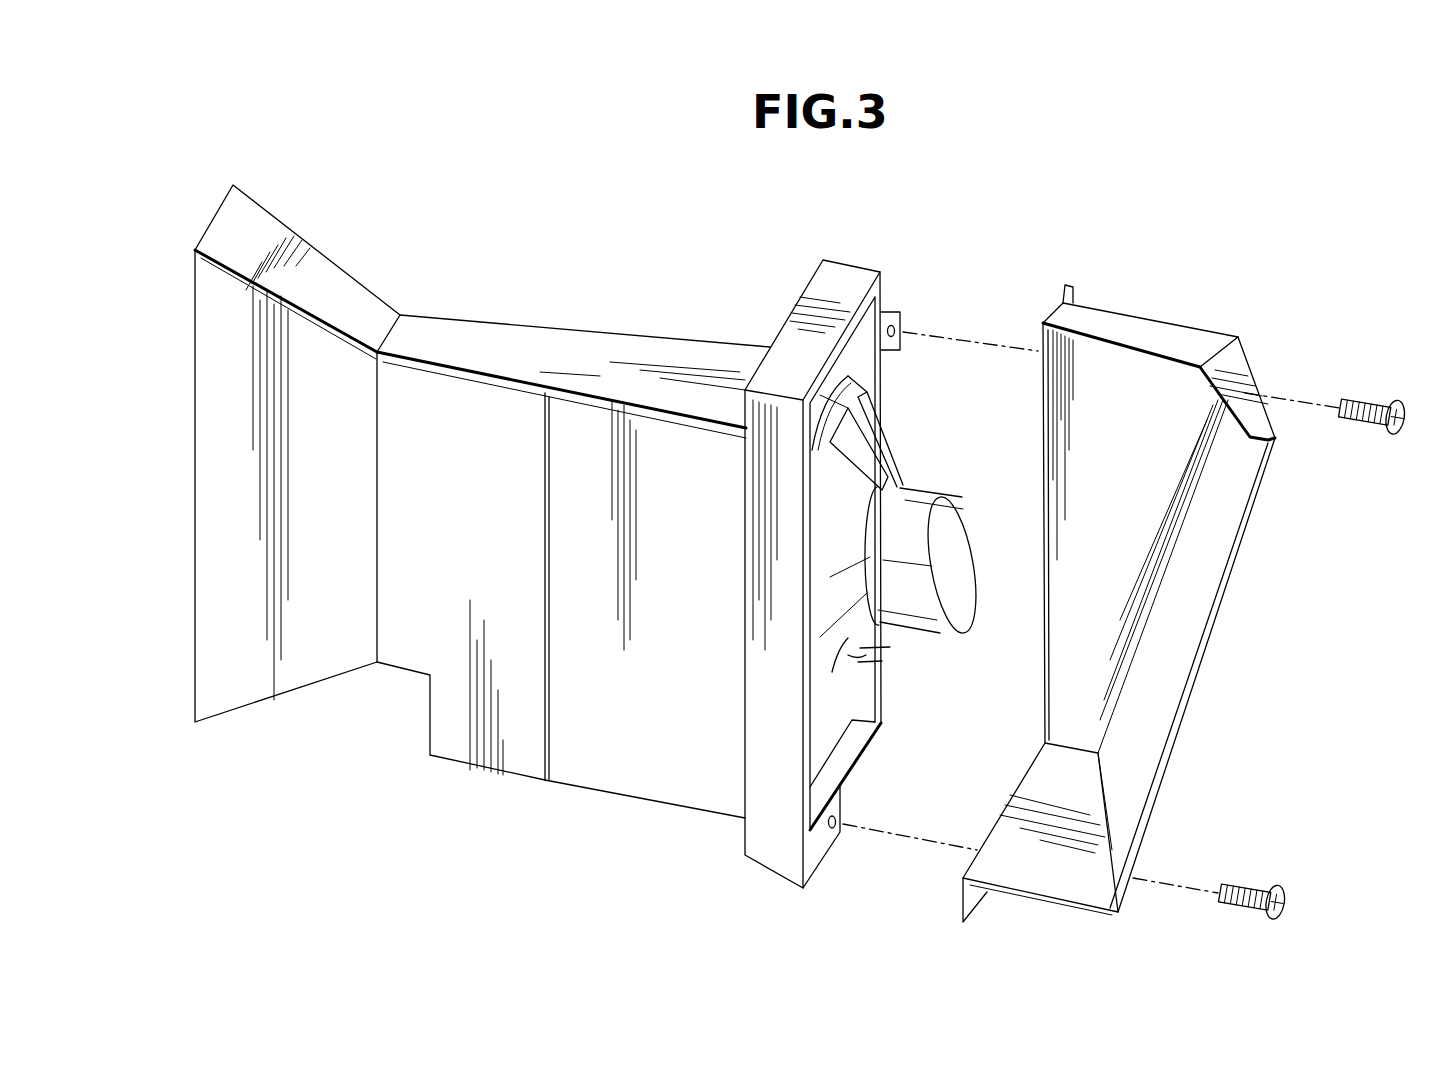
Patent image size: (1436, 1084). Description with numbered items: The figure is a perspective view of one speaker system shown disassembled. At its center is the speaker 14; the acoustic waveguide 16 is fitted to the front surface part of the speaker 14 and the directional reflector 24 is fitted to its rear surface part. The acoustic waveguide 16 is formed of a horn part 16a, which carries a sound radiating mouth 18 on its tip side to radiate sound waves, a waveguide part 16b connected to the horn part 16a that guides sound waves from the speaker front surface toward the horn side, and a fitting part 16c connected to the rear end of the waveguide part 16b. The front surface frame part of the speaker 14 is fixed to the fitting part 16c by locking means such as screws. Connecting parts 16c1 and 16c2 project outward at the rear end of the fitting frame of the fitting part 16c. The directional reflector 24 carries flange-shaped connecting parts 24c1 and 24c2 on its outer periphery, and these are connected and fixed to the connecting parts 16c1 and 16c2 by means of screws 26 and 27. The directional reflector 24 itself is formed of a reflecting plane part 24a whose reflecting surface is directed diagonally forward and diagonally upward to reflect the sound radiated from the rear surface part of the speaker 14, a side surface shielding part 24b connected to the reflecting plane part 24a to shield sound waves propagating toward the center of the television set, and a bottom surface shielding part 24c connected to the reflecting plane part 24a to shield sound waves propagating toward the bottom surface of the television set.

The speaker 14 is at (895, 450).
The acoustic waveguide 16 is at (652, 215).
The horn part 16a is at (385, 312).
The waveguide part 16b is at (540, 337).
The fitting part 16c is at (790, 333).
The connecting part 16c1 is at (898, 328).
The connecting part 16c2 is at (817, 852).
The sound radiating mouth 18 is at (195, 463).
The directional reflector 24 is at (1322, 595).
The reflecting plane part 24a is at (1197, 597).
The side surface shielding part 24b is at (1105, 660).
The bottom surface shielding part 24c is at (1090, 795).
The connecting part 24c1 is at (1068, 290).
The connecting part 24c2 is at (975, 898).
The screw 26 is at (1360, 400).
The screw 27 is at (1258, 885).